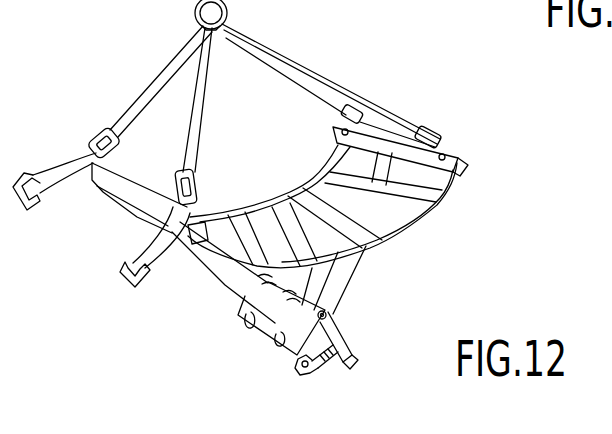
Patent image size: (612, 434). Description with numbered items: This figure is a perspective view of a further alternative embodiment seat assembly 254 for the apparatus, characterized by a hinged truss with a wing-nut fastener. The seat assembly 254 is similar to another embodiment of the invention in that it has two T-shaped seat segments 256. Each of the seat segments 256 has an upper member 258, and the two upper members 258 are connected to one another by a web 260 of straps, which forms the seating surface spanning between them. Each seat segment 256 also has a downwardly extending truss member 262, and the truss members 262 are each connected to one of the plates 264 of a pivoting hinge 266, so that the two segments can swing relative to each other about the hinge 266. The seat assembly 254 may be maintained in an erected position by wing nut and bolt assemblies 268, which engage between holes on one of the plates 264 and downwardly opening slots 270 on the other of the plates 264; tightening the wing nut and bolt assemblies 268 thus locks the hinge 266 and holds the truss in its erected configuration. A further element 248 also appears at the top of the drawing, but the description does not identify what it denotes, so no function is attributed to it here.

The suspension ring 248 is at (127, 15).
The seat assembly 254 is at (329, 77).
The T-shaped seat segments 256 is at (365, 268).
The upper members 258 is at (125, 173).
The web of straps 260 is at (258, 208).
The truss members 262 is at (185, 278).
The plates 264 is at (258, 333).
The pivoting hinge 266 is at (355, 363).
The wing nut and bolt assemblies 268 is at (330, 370).
The downwardly opening slots 270 is at (245, 335).